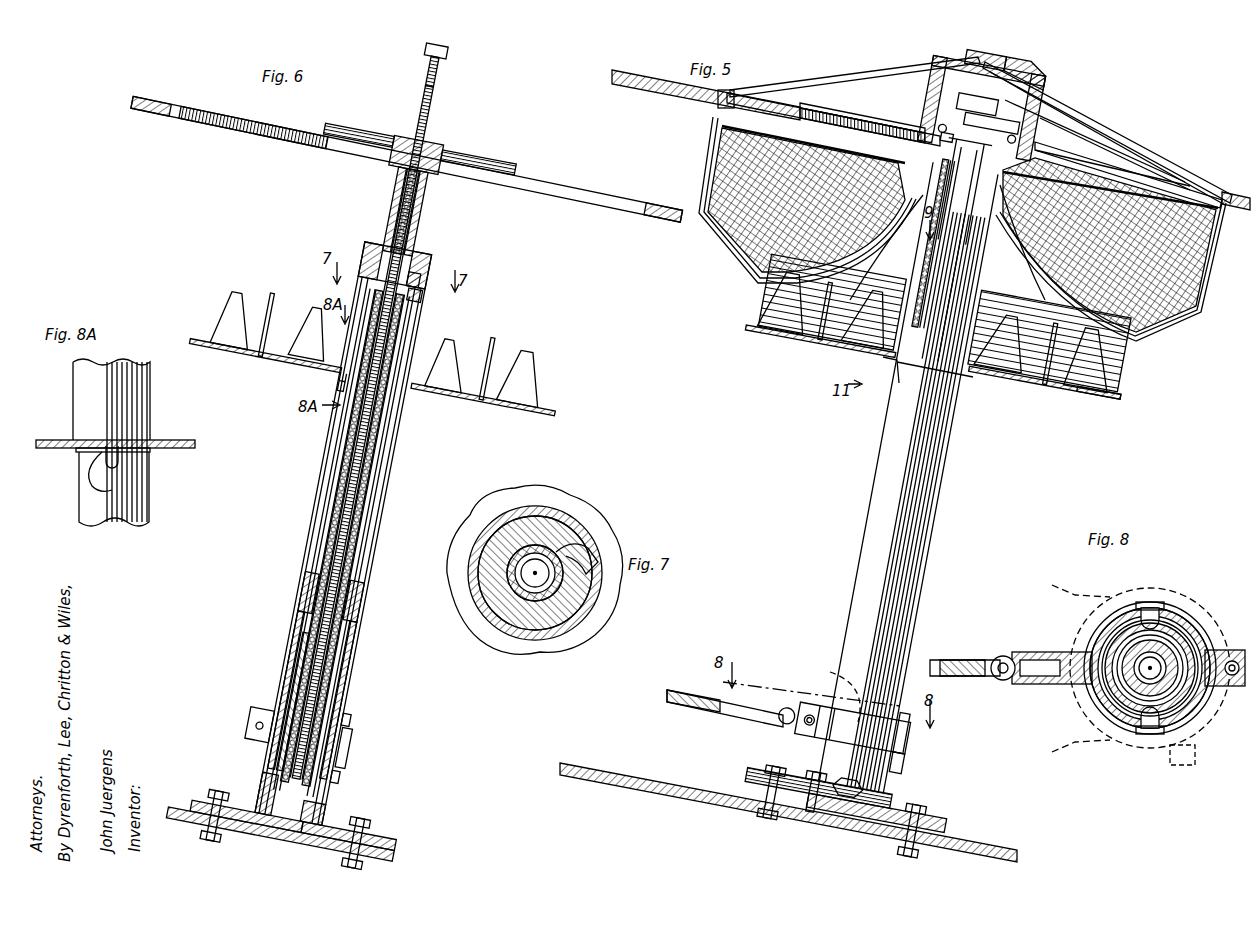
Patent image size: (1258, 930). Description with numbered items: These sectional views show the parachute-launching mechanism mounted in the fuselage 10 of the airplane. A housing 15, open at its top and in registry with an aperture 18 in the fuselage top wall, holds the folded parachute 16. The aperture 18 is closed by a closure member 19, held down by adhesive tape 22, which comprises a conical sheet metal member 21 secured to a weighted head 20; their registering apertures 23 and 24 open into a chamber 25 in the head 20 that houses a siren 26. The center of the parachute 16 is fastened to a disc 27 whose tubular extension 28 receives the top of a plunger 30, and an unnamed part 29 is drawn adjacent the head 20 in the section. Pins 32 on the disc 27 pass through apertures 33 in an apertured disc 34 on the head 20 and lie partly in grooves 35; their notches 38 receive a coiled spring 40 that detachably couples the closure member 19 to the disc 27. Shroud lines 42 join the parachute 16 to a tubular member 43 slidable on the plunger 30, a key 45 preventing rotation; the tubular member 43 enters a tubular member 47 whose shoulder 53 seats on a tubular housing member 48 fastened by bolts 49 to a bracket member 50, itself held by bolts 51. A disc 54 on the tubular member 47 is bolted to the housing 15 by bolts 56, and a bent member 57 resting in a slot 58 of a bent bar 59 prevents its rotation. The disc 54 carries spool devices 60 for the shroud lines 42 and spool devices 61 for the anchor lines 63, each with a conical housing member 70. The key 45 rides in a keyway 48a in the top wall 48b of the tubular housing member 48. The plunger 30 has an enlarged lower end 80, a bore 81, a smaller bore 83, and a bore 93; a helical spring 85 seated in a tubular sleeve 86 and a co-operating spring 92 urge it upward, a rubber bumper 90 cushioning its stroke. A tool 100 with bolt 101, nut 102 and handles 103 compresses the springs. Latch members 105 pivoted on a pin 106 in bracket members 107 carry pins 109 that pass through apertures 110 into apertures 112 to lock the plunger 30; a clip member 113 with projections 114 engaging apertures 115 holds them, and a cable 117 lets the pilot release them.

In FIG. 6, the fuselage 10 is at (182, 818).
In FIG. 5, the fuselage 10 is at (626, 90).
In FIG. 5, the housing 15 is at (1200, 300).
In FIG. 5, the parachute 16 is at (1160, 255).
In FIG. 6, the aperture 18 is at (660, 212).
In FIG. 5, the aperture 18 is at (1236, 192).
In FIG. 5, the closure member 19 is at (904, 112).
In FIG. 5, the head 20 is at (1020, 90).
In FIG. 5, the conical sheet metal member 21 is at (1120, 140).
In FIG. 5, the adhesive tape 22 is at (722, 94).
In FIG. 5, the aperture 23 is at (1005, 68).
In FIG. 5, the aperture 24 is at (990, 52).
In FIG. 5, the chamber 25 is at (1012, 107).
In FIG. 5, the siren 26 is at (950, 75).
In FIG. 5, the disc 27 is at (938, 140).
In FIG. 5, the tubular extension 28 is at (950, 170).
In FIG. 5, the striped band 29 is at (856, 118).
In FIG. 6, the plunger 30 is at (424, 188).
In FIG. 5, the plunger 30 is at (932, 282).
In FIG. 5, the pins 32 is at (956, 122).
In FIG. 5, the apertures 33 is at (954, 146).
In FIG. 5, the apertured disc 34 is at (890, 112).
In FIG. 5, the grooves 35 is at (1044, 104).
In FIG. 5, the notches 38 is at (992, 124).
In FIG. 5, the coiled spring 40 is at (1062, 150).
In FIG. 5, the shroud lines 42 is at (790, 290).
In FIG. 5, the tubular member 43 is at (922, 258).
In FIG. 6, the key 45 is at (424, 246).
In FIG. 7, the key 45 is at (586, 586).
In FIG. 6, the tubular member 47 is at (440, 262).
In FIG. 6, the tubular housing member 48 is at (405, 456).
In FIG. 5, the tubular housing member 48 is at (858, 588).
In FIG. 8, the tubular housing member 48 is at (1094, 690).
In FIG. 8A, the tubular housing member 48 is at (150, 516).
In FIG. 7, the keyway 48a is at (580, 556).
In FIG. 6, the top wall 48b is at (370, 262).
In FIG. 6, the bolts 49 is at (338, 806).
In FIG. 5, the bolts 49 is at (845, 802).
In FIG. 6, the bracket member 50 is at (395, 848).
In FIG. 5, the bracket member 50 is at (950, 828).
In FIG. 6, the bolts 51 is at (240, 790).
In FIG. 6, the shoulder 53 is at (432, 274).
In FIG. 6, the disc 54 is at (568, 410).
In FIG. 5, the disc 54 is at (1080, 400).
In FIG. 7, the disc 54 is at (590, 655).
In FIG. 8A, the disc 54 is at (180, 438).
In FIG. 6, the bolts 56 is at (272, 298).
In FIG. 5, the bolts 56 is at (820, 320).
In FIG. 6, the bent member 57 is at (330, 376).
In FIG. 8A, the bent member 57 is at (108, 452).
In FIG. 6, the slot 58 is at (336, 406).
In FIG. 8A, the slot 58 is at (120, 466).
In FIG. 8A, the bent bar 59 is at (116, 490).
In FIG. 6, the spool devices 60 is at (240, 310).
In FIG. 5, the spool devices 60 is at (775, 320).
In FIG. 6, the spool devices 61 is at (322, 316).
In FIG. 5, the spool devices 61 is at (848, 336).
In FIG. 5, the anchor lines 63 is at (886, 304).
In FIG. 5, the conical housing member 70 is at (1100, 378).
In FIG. 6, the enlarged lower end of plunger 80 is at (365, 586).
In FIG. 6, the bore 81 is at (366, 500).
In FIG. 7, the bore 81 is at (528, 602).
In FIG. 6, the smaller bore 83 is at (398, 172).
In FIG. 6, the helical spring 85 is at (432, 206).
In FIG. 8, the helical spring 85 is at (1180, 640).
In FIG. 6, the tubular sleeve 86 is at (346, 661).
In FIG. 8, the tubular sleeve 86 is at (1124, 658).
In FIG. 6, the rubber bumper 90 is at (326, 542).
In FIG. 6, the spring 92 is at (340, 696).
In FIG. 8, the spring 92 is at (1118, 648).
In FIG. 6, the bore 93 is at (350, 626).
In FIG. 8, the bore 93 is at (1100, 630).
In FIG. 6, the tool 100 is at (442, 118).
In FIG. 5, the tool 100 is at (895, 758).
In FIG. 6, the bolt 101 is at (439, 64).
In FIG. 6, the nut 102 is at (456, 150).
In FIG. 6, the handles 103 is at (368, 142).
In FIG. 6, the latch members 105 is at (268, 716).
In FIG. 5, the latch members 105 is at (892, 776).
In FIG. 8, the latch members 105 is at (1196, 630).
In FIG. 6, the pin 106 is at (356, 745).
In FIG. 8, the pin 106 is at (1234, 660).
In FIG. 6, the bracket members 107 is at (352, 716).
In FIG. 5, the bracket members 107 is at (902, 726).
In FIG. 8, the bracket members 107 is at (1224, 690).
In FIG. 5, the pins 109 is at (832, 674).
In FIG. 8, the pins 109 is at (1152, 610).
In FIG. 8, the apertures 110 is at (1166, 612).
In FIG. 8, the apertures 112 is at (1100, 620).
In FIG. 5, the clip member 113 is at (790, 728).
In FIG. 8, the clip member 113 is at (1000, 680).
In FIG. 8, the projections 114 is at (1030, 684).
In FIG. 6, the apertures 115 is at (262, 735).
In FIG. 5, the apertures 115 is at (812, 736).
In FIG. 8, the apertures 115 is at (1068, 652).
In FIG. 5, the cable 117 is at (706, 708).
In FIG. 8, the cable 117 is at (958, 660).